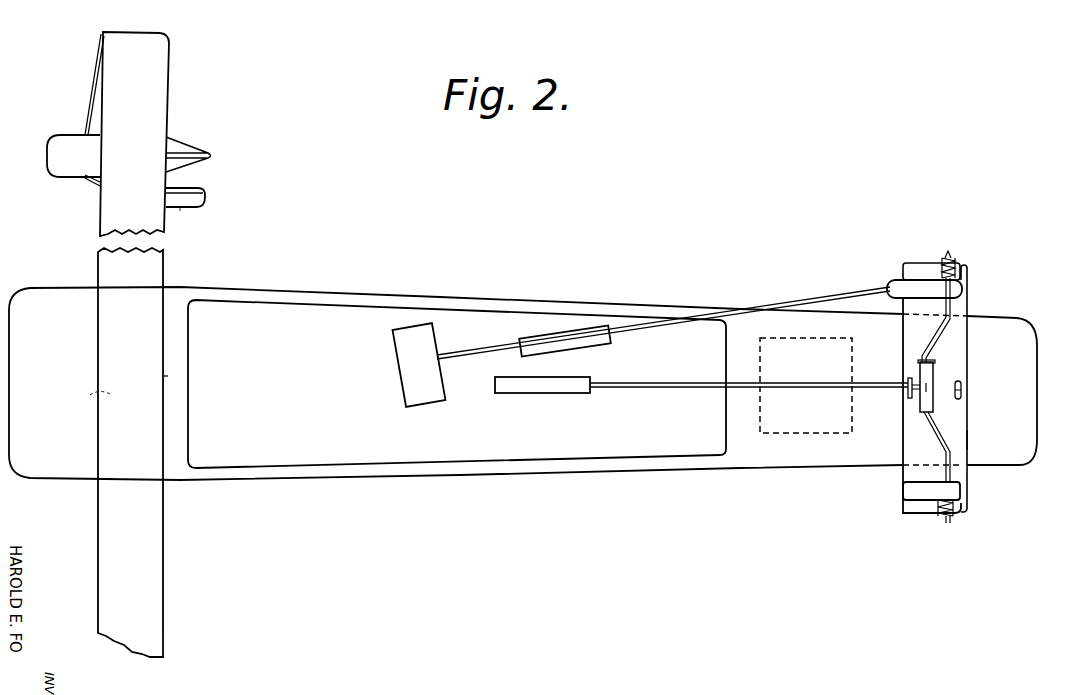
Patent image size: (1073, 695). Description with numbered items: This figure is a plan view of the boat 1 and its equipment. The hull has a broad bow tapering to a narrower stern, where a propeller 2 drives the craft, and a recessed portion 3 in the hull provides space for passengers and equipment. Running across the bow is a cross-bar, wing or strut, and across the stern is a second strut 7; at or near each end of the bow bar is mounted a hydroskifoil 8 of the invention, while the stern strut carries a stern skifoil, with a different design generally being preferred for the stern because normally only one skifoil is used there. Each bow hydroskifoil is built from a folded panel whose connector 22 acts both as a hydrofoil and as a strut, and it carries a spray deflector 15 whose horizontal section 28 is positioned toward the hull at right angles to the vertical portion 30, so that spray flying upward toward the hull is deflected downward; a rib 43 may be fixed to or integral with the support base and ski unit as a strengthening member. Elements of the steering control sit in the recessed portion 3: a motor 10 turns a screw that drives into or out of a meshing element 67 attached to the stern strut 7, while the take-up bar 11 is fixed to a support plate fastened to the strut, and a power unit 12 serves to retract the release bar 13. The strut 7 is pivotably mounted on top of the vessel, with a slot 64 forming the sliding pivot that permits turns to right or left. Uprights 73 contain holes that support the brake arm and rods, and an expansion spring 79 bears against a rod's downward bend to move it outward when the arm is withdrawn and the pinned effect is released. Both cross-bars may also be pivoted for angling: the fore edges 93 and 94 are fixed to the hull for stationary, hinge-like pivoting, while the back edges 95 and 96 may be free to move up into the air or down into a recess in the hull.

The boat 1 is at (38, 283).
The propeller 2 is at (782, 428).
The recessed portion 3 is at (356, 312).
The strut 7 is at (959, 308).
The hydroskifoil 8 is at (70, 142).
The motor 10 is at (410, 365).
The take-up bar 11 is at (652, 326).
The power unit 12 is at (541, 390).
The release bar 13 is at (672, 384).
The spray deflector 15 is at (204, 202).
The connector 22 is at (92, 100).
The horizontal section 28 is at (178, 206).
The vertical portion 30 is at (197, 190).
The rib 43 is at (187, 148).
The slot 64 is at (961, 392).
The meshing element 67 is at (533, 342).
The uprights 73 is at (923, 414).
The expansion spring 79 is at (966, 272).
The fore edge 93 is at (98, 392).
The fore edge 94 is at (903, 426).
The back edge 95 is at (164, 375).
The back edge 96 is at (967, 440).